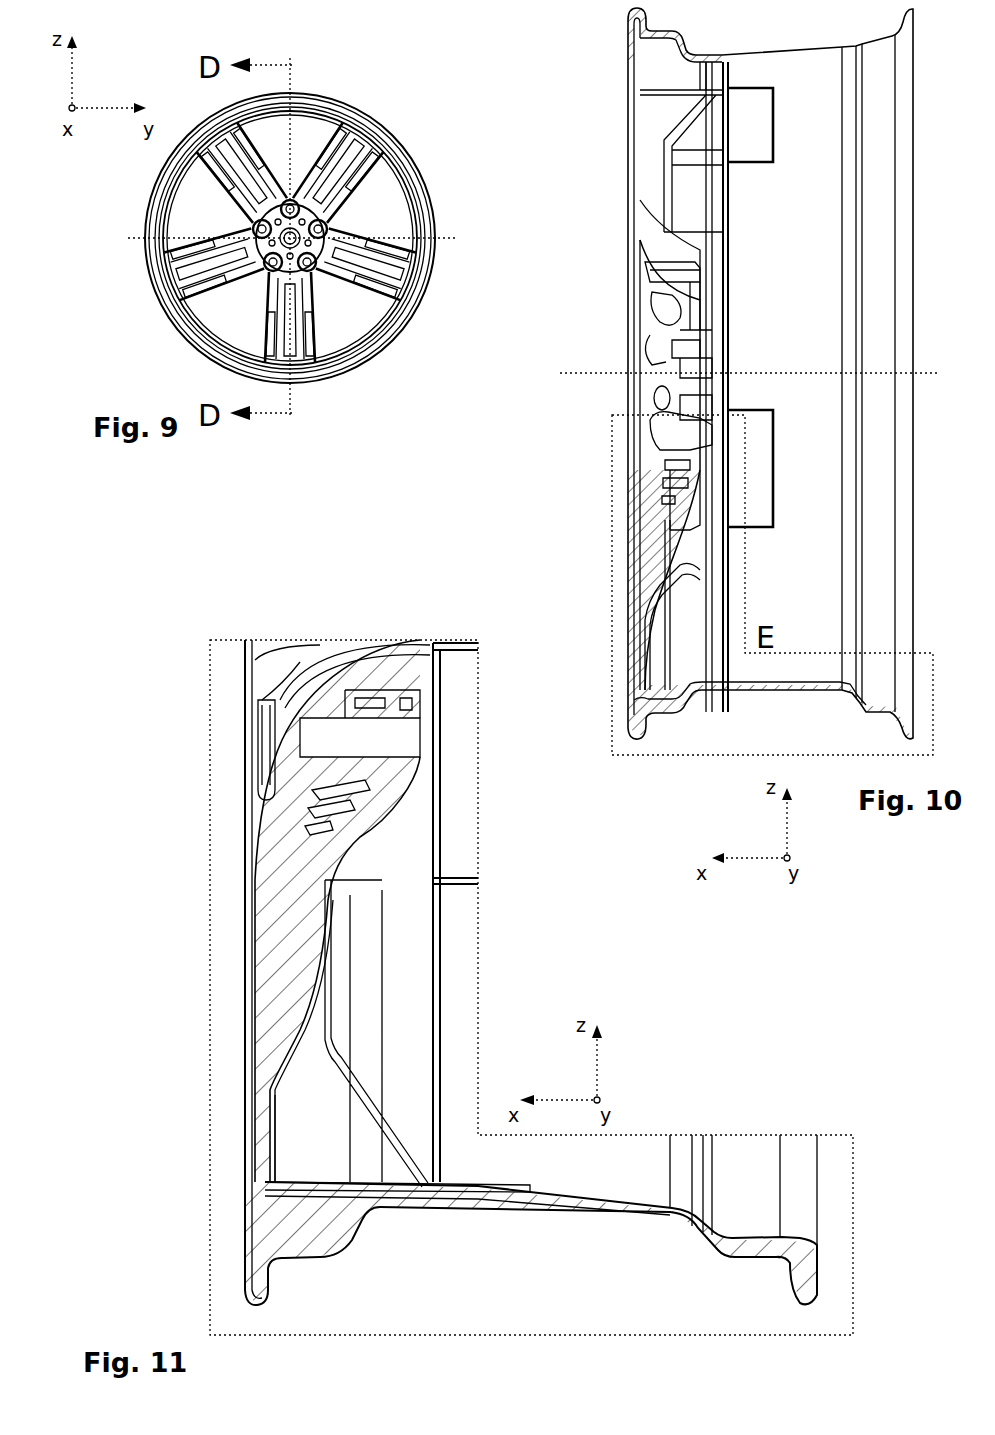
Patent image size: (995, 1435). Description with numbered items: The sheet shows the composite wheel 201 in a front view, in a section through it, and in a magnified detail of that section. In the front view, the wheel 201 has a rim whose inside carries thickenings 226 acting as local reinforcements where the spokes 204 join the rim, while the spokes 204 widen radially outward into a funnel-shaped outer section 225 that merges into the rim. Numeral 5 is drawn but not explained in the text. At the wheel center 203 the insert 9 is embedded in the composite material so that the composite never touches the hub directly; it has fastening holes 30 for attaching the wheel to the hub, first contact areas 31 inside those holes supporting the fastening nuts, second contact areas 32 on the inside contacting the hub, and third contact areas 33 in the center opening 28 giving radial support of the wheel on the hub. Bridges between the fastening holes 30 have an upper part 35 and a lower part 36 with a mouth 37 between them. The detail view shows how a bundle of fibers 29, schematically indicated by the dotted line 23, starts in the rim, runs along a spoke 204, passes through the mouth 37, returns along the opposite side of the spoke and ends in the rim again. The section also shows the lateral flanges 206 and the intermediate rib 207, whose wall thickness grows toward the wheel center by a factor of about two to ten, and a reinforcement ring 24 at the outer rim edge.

In FIG. 9, the wheel 5 is at (360, 213).
In FIG. 10, the insert 9 is at (632, 214).
In FIG. 11, the insert 9 is at (212, 684).
In FIG. 10, the dotted line 23 is at (770, 373).
In FIG. 11, the dotted line 23 is at (262, 832).
In FIG. 10, the reinforcement ring 24 is at (672, 605).
In FIG. 11, the reinforcement ring 24 is at (250, 1258).
In FIG. 9, the center opening 28 is at (258, 256).
In FIG. 10, the fibers 29 is at (660, 262).
In FIG. 11, the fibers 29 is at (266, 982).
In FIG. 9, the fastening holes 30 is at (252, 224).
In FIG. 10, the fastening holes 30 is at (646, 442).
In FIG. 10, the first contact areas 31 is at (690, 306).
In FIG. 10, the second contact areas 32 is at (652, 396).
In FIG. 10, the third contact areas 33 is at (680, 340).
In FIG. 11, the upper part 35 is at (332, 660).
In FIG. 11, the lower part 36 is at (268, 766).
In FIG. 11, the mouth 37 is at (248, 636).
In FIG. 9, the wheel 201 is at (405, 118).
In FIG. 9, the wheel center 203 is at (395, 170).
In FIG. 9, the spokes 204 is at (402, 284).
In FIG. 11, the spokes 204 is at (222, 838).
In FIG. 11, the lateral flanges 206 is at (328, 1130).
In FIG. 11, the intermediate rib 207 is at (226, 908).
In FIG. 10, the outer section 225 is at (630, 118).
In FIG. 11, the outer section 225 is at (272, 1098).
In FIG. 10, the thickenings 226 is at (742, 477).